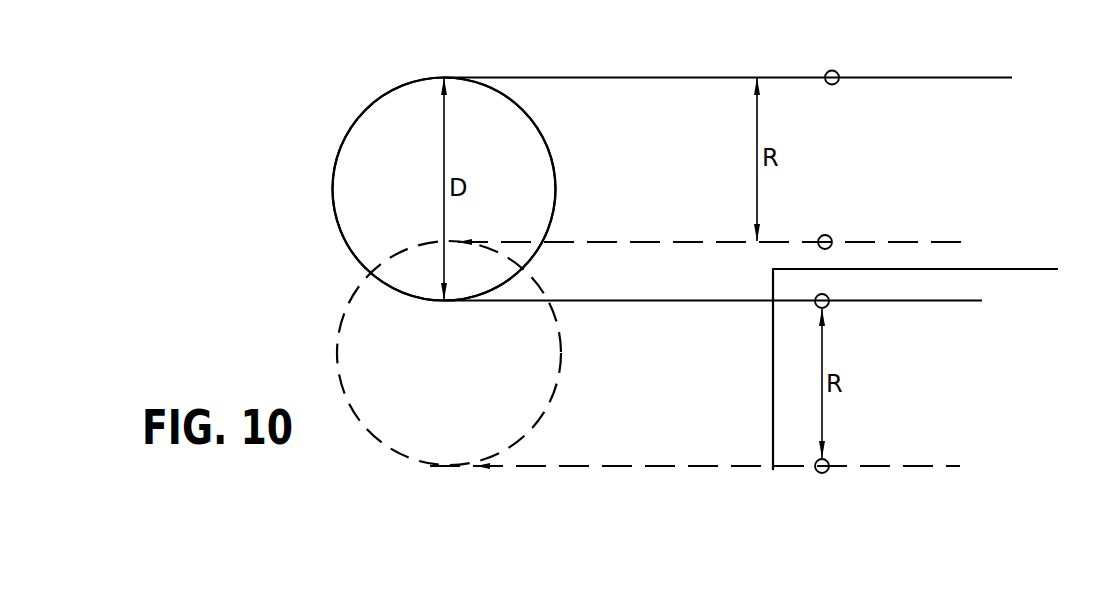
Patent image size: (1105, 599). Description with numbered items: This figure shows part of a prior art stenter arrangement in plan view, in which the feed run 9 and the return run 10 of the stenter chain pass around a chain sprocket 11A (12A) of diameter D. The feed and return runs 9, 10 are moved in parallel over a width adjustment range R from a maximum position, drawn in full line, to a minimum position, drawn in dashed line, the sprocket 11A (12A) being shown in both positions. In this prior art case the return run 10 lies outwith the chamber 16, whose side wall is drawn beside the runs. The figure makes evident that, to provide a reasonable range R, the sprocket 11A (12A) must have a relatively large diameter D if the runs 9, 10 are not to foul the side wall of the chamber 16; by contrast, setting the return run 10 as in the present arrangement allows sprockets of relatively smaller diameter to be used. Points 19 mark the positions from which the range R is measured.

The feed run 9 is at (645, 301).
The return run 10 is at (693, 77).
The sprocket 11A is at (338, 225).
The sprocket 12A is at (444, 189).
The chamber 16 is at (773, 397).
The pivot axis point 19 is at (838, 75).